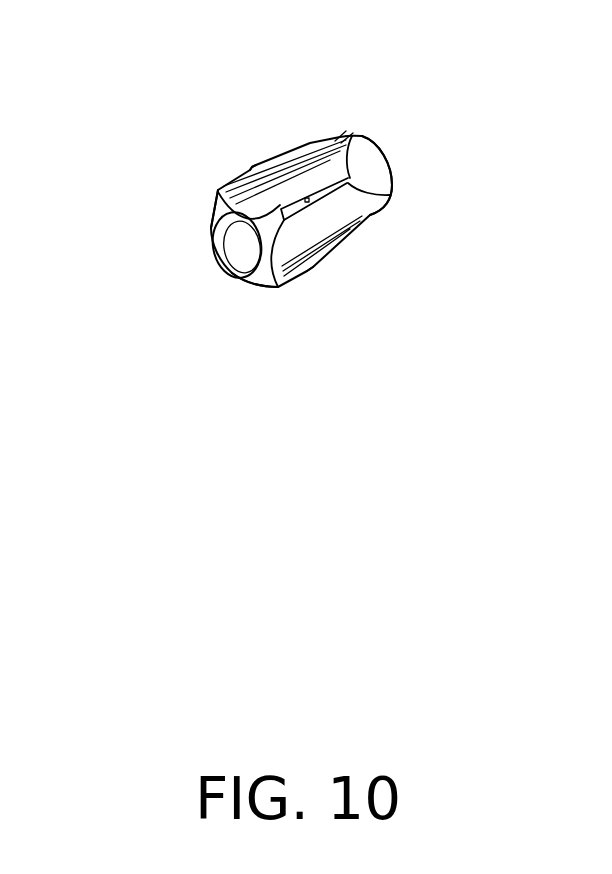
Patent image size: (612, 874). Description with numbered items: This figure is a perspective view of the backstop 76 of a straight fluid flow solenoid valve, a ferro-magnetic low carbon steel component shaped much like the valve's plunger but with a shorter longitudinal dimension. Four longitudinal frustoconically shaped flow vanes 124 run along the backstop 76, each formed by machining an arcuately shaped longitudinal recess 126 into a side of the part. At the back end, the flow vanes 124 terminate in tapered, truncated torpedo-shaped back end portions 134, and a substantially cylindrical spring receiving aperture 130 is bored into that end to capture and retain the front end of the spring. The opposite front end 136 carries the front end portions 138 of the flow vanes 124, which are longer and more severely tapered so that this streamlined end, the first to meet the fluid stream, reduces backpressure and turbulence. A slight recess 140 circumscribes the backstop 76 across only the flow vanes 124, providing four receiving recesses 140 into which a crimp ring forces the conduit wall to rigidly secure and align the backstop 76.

The backstop 76 is at (230, 237).
The flow vanes 124 is at (282, 156).
The arcuately shaped longitudinal recesses 126 is at (243, 205).
The spring receiving aperture 130 is at (210, 243).
The back end portions of the flow vanes 134 is at (216, 204).
The front end 136 is at (383, 150).
The front end portions of the flow vanes 138 is at (326, 140).
The recess 140 is at (252, 166).